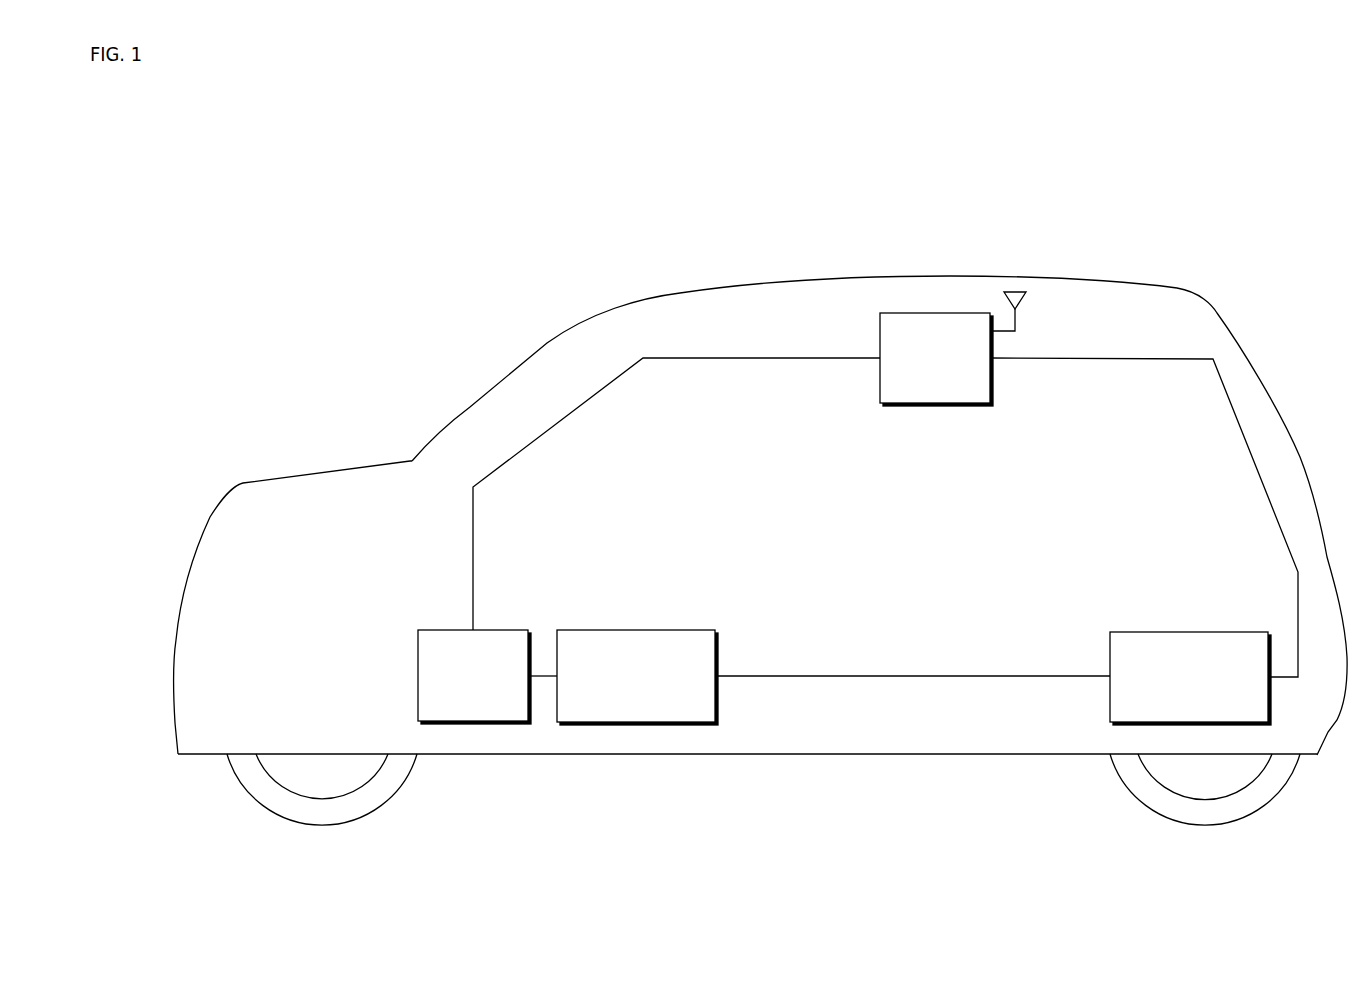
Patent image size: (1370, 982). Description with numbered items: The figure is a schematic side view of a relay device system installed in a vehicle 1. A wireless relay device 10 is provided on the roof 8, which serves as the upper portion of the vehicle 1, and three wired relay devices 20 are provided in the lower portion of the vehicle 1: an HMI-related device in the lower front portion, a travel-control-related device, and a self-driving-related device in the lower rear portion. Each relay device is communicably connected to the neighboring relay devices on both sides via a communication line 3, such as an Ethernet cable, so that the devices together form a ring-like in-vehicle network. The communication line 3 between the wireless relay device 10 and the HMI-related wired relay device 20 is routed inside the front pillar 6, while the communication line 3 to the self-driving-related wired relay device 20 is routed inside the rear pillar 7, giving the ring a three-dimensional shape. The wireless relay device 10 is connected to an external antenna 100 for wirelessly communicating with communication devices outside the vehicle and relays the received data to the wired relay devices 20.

The vehicle 1 is at (317, 473).
The communication line 3 is at (557, 423).
The front pillar 6 is at (540, 342).
The rear pillar 7 is at (1293, 378).
The roof 8 is at (948, 265).
The wireless relay device 10 is at (953, 407).
The wired relay device 20 is at (437, 628).
The external antenna 100 is at (1021, 297).